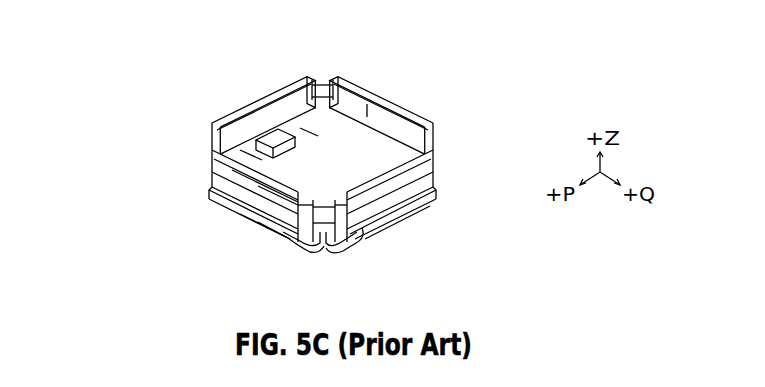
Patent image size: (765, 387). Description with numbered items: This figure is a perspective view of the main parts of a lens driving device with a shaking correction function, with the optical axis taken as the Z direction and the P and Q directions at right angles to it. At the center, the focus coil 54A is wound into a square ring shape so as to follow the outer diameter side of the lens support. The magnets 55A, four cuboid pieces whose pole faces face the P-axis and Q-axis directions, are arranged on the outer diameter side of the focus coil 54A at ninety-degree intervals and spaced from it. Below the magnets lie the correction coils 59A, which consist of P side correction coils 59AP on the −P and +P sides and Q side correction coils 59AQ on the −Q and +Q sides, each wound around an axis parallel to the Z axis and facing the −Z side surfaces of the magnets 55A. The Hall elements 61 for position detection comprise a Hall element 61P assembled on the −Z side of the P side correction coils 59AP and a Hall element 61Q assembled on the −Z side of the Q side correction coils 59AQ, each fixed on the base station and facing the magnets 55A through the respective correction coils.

The focus coil 54A is at (288, 144).
The magnets 55A is at (398, 201).
The correction coils 59A is at (306, 185).
The P side correction coils 59AP is at (273, 262).
The Q side correction coils 59AQ is at (233, 145).
The Hall elements 61 is at (209, 158).
The Hall element 61Q is at (266, 126).
The Hall element 61P is at (257, 229).